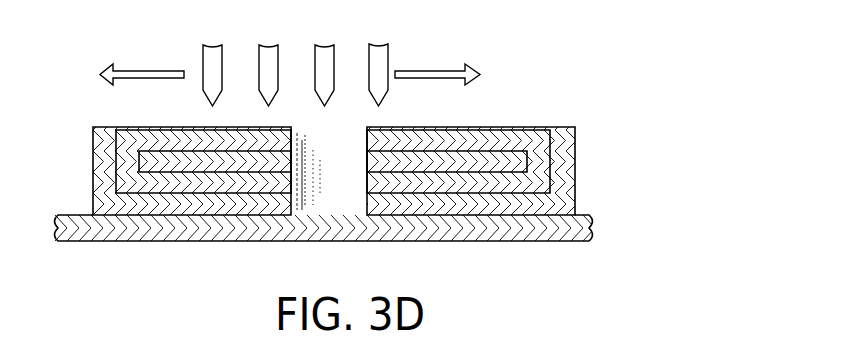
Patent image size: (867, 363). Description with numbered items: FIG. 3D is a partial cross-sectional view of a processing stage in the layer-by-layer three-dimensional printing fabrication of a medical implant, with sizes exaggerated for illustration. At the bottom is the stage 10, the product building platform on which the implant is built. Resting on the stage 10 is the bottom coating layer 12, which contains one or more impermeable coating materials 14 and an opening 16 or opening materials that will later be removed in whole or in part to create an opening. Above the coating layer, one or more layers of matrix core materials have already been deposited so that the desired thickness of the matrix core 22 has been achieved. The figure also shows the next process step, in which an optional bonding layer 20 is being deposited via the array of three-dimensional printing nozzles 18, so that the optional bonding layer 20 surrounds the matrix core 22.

The stage 10 is at (594, 229).
The bottom coating layer 12 is at (402, 171).
The impermeable coating materials 14 is at (575, 188).
The opening 16 is at (324, 188).
The 3-D printing nozzles 18 is at (405, 50).
The optional bonding layer 20 is at (530, 182).
The matrix core 22 is at (478, 160).